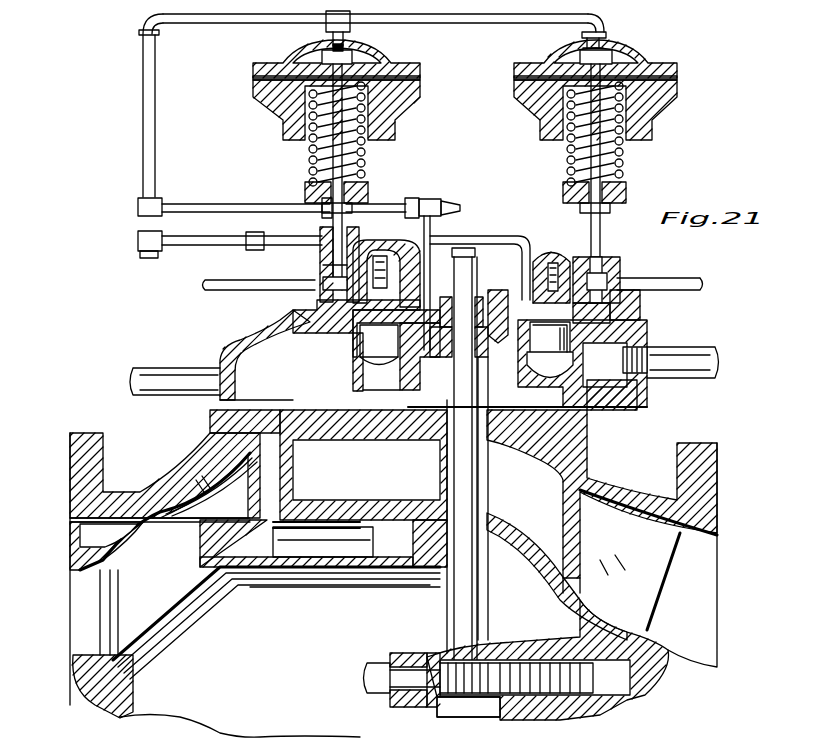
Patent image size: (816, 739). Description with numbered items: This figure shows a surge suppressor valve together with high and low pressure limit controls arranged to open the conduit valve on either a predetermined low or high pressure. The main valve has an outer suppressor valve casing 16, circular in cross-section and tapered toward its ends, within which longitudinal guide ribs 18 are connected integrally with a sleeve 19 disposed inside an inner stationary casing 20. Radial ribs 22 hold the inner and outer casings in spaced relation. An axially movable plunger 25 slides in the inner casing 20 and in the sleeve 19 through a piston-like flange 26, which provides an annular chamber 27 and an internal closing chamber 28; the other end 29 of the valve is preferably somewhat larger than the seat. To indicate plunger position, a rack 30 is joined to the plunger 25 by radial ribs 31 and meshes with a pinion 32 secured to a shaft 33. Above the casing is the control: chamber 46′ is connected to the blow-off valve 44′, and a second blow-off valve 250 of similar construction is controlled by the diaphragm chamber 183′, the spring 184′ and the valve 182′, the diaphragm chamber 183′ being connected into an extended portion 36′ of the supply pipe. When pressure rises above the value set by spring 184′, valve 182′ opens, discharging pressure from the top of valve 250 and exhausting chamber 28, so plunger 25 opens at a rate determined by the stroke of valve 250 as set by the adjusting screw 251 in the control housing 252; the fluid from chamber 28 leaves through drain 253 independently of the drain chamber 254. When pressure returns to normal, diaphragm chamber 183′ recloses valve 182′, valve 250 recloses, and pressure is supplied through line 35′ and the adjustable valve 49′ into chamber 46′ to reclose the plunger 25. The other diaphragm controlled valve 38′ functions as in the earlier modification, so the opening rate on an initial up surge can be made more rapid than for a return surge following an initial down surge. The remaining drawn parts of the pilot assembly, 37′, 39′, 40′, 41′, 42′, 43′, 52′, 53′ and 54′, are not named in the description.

The extended portion of pipe 36′ is at (452, 24).
The diaphragm housing cap 37′ is at (326, 54).
The diaphragm controlled valve 38′ is at (352, 62).
The diaphragm chamber 183′ is at (612, 68).
The spring 39′ is at (312, 164).
The spring 184′ is at (622, 160).
The line 35′ is at (255, 198).
The pipe 42′ is at (180, 240).
The coupling 52′ is at (254, 232).
The adjustable valve 49′ is at (431, 206).
The valve 40′ is at (320, 276).
The pipe 41′ is at (326, 294).
The pilot valve 53′ is at (371, 250).
The housing 54′ is at (266, 365).
The valve member 43′ is at (352, 352).
The blow-off valve 44′ is at (364, 362).
The drain chamber 254 is at (163, 368).
The drain 253 is at (688, 360).
The shaft 33 is at (480, 480).
The blow-off valve 250 is at (540, 352).
The adjusting screw 251 is at (548, 280).
The control housing 252 is at (520, 294).
The valve 182′ is at (621, 302).
The suppressor valve casing 16 is at (176, 462).
The longitudinal guide ribs 18 is at (204, 488).
The chamber 46′ is at (400, 425).
The sleeve 19 is at (337, 516).
The inner stationary casing 20 is at (440, 515).
The annular chamber 27 is at (305, 548).
The axially movable plunger 25 is at (175, 595).
The internal closing chamber 28 is at (240, 679).
The piston-like flange 26 is at (187, 732).
The radial ribs 31 is at (380, 607).
The radial ribs 22 is at (655, 570).
The other end of the valve 29 is at (720, 553).
The rack 30 is at (522, 670).
The pinion 32 is at (470, 700).